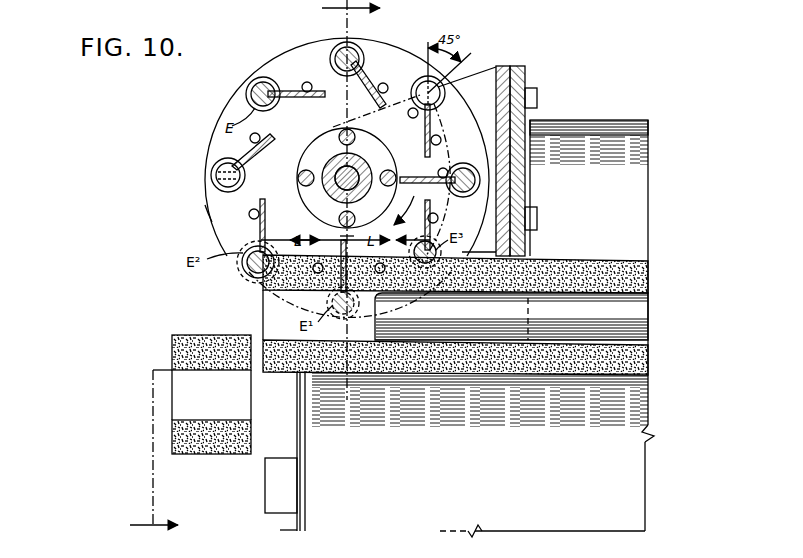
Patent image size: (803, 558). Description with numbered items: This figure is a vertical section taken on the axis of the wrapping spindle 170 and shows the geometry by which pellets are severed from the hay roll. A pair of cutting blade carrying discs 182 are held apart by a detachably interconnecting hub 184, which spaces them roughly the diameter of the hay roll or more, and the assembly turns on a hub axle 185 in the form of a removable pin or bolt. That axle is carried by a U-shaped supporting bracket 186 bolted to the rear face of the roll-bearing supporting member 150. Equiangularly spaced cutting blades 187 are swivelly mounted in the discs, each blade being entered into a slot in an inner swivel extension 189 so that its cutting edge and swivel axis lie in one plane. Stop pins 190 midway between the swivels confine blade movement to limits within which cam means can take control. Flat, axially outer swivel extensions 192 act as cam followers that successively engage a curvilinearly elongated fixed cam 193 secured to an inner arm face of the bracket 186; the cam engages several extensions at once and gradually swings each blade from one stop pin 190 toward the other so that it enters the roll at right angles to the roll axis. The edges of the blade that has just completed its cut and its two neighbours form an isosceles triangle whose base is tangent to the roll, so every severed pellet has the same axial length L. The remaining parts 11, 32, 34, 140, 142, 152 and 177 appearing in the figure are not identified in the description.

The web path axis 11 is at (344, 413).
The frame member 32 is at (584, 120).
The turret disk 34 is at (204, 164).
The frame housing 140 is at (619, 223).
The web guide block 142 is at (286, 417).
The roll-bearing supporting member 150 is at (537, 95).
The support plate 152 is at (297, 521).
The wrapping spindle 170 is at (455, 341).
The web support 177 is at (352, 332).
The cutting blade carrying discs 182 is at (210, 212).
The detachably interconnecting hub 184 is at (300, 191).
The hub axle 185 is at (356, 170).
The U-shaped hub axle supporting bracket 186 is at (492, 68).
The cutting blades 187 is at (390, 46).
The inner swivel extension 189 is at (248, 266).
The stop pins 190 is at (302, 83).
The axially outer swivel extension 192 is at (212, 176).
The fixed cam 193 is at (470, 112).